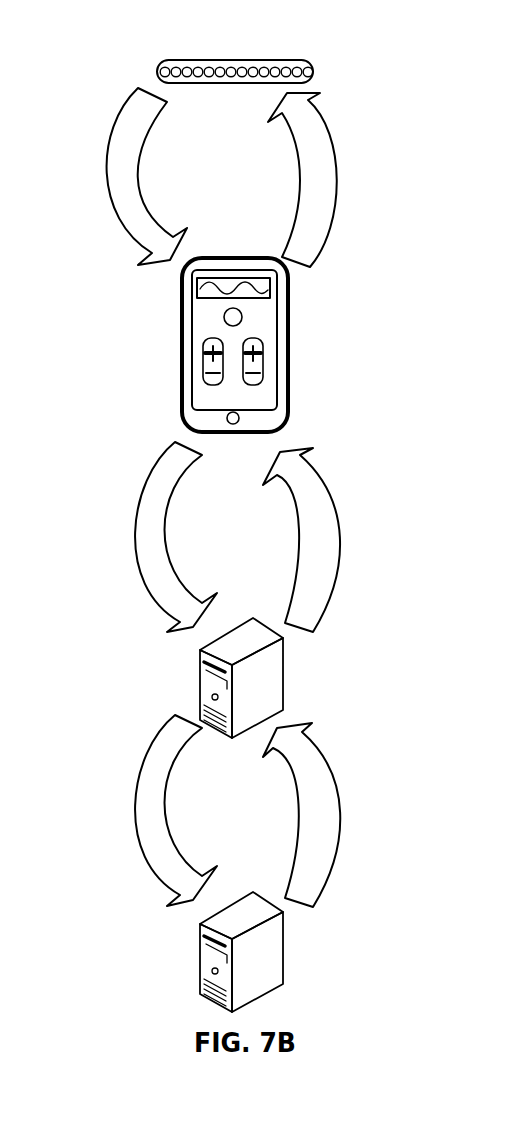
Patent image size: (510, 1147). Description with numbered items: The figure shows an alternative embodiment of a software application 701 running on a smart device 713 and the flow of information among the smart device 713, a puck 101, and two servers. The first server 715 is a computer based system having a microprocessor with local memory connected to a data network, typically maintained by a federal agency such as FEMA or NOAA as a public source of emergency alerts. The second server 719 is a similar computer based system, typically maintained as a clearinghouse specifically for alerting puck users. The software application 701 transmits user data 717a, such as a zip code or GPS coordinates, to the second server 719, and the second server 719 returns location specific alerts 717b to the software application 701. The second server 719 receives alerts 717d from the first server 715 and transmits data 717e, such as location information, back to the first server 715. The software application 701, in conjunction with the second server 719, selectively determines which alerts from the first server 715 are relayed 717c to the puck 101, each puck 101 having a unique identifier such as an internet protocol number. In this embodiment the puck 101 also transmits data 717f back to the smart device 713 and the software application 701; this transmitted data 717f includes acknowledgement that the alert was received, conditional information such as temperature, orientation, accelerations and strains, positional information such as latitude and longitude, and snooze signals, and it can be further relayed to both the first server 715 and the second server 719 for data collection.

The puck 101 is at (260, 58).
The software application 701 is at (158, 322).
The smart device 713 is at (182, 365).
The first server 715 is at (275, 970).
The second server 719 is at (275, 696).
The user data 717a is at (162, 466).
The location specific alerts 717b is at (303, 520).
The relayed alerts 717c is at (303, 177).
The alerts 717d is at (305, 803).
The data 717e is at (167, 727).
The transmitted data 717f is at (118, 135).